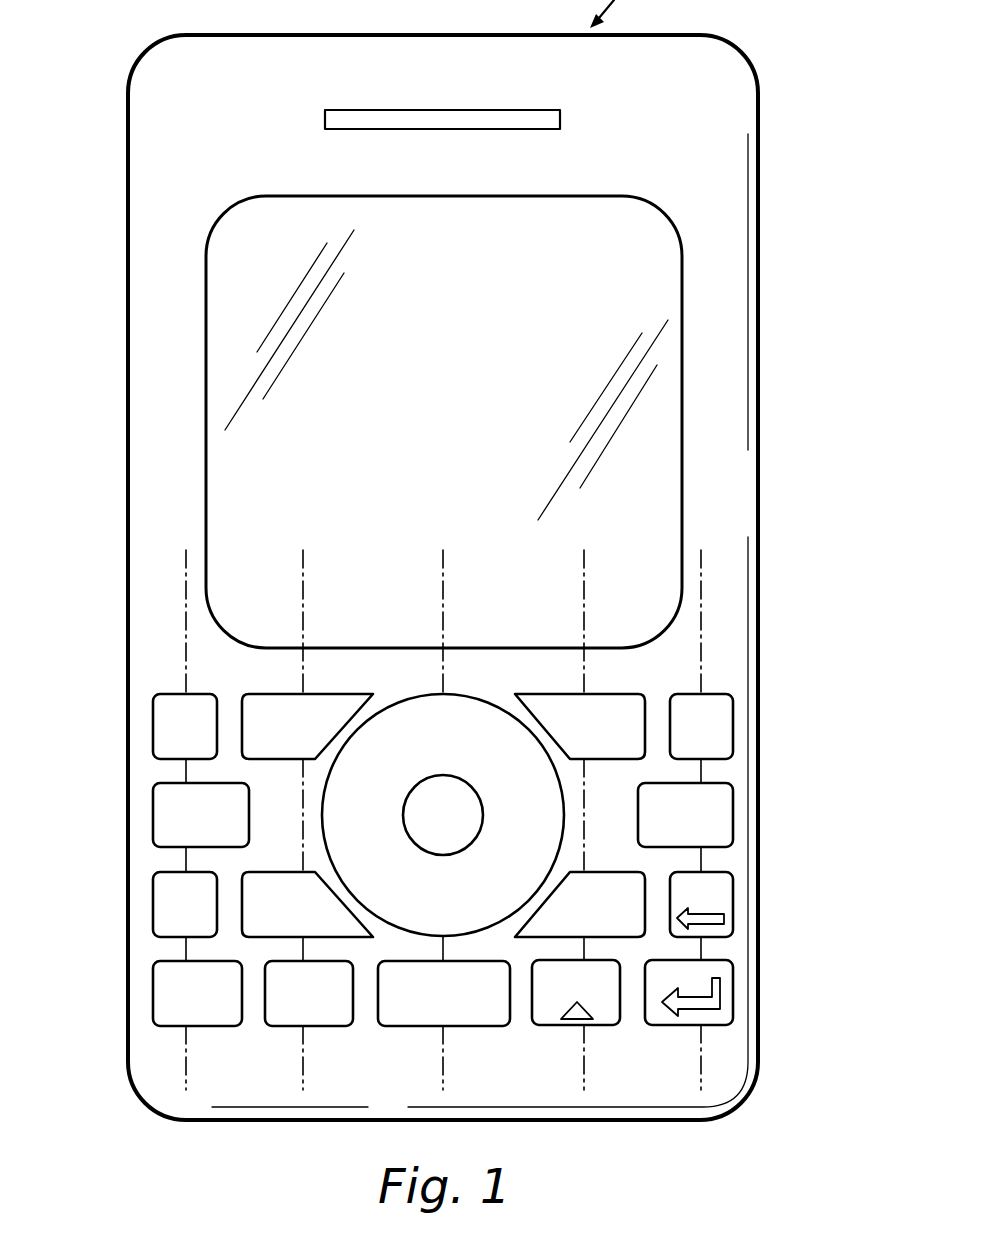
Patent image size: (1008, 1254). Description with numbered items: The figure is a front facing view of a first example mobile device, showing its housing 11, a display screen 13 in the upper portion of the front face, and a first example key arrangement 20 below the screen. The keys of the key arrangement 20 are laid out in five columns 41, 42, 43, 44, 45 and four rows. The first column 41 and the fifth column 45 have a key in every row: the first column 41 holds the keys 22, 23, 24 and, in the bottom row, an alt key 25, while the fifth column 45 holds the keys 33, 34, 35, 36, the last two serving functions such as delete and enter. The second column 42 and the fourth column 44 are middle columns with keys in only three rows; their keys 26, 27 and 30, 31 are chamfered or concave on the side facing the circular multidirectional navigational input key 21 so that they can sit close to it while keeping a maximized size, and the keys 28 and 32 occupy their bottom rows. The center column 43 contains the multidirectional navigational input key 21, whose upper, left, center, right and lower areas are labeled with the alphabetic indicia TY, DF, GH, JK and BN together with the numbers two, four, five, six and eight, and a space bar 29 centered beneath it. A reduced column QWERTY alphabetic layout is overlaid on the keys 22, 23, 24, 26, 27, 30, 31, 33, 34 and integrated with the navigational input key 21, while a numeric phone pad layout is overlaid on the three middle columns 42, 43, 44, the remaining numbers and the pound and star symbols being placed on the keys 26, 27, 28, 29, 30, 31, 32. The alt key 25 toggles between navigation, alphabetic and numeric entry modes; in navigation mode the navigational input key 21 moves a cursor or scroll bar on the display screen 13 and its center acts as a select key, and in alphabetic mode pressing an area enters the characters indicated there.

The housing 11 is at (718, 283).
The display screen 13 is at (500, 368).
The key arrangement 20 is at (766, 779).
The multidirectional navigational input key 21 is at (482, 697).
The key 22 is at (150, 727).
The key 23 is at (152, 808).
The key 24 is at (152, 905).
The alt key 25 is at (152, 998).
The key 26 is at (265, 692).
The key 27 is at (242, 872).
The key 28 is at (327, 1026).
The space bar 29 is at (467, 1026).
The key 30 is at (620, 693).
The key 31 is at (625, 872).
The key 32 is at (605, 1025).
The key 33 is at (733, 722).
The key 34 is at (733, 810).
The key 35 is at (733, 900).
The key 36 is at (733, 990).
The first column 41 is at (187, 598).
The second column 42 is at (303, 585).
The center column 43 is at (443, 572).
The fourth column 44 is at (584, 575).
The fifth column 45 is at (700, 587).